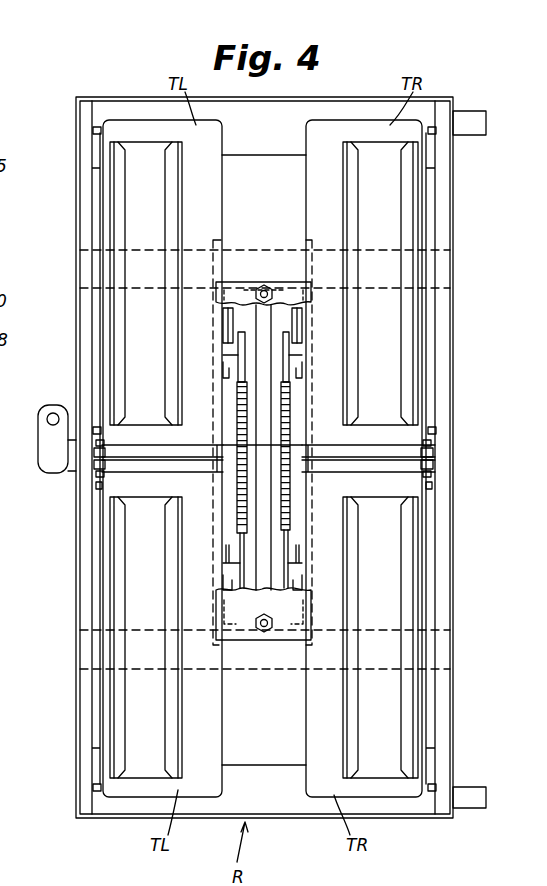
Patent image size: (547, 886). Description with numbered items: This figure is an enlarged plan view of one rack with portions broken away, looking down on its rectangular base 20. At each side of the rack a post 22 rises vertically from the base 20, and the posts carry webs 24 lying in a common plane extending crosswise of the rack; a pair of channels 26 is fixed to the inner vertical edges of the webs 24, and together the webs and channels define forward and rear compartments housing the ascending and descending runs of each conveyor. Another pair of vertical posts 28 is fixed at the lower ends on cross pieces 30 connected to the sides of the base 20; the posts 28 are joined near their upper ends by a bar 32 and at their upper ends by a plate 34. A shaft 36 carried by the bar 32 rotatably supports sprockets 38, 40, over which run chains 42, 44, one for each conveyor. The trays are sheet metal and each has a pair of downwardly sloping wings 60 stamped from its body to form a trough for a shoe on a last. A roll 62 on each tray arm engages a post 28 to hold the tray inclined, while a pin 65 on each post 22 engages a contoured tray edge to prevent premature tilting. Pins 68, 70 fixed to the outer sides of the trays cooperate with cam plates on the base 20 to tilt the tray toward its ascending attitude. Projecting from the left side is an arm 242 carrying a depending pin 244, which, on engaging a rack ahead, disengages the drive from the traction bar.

The rectangular base 20 is at (283, 818).
The post 22 is at (96, 480).
The web 24 is at (150, 460).
The channel 26 is at (223, 545).
The vertical post 28 is at (248, 288).
The cross piece 30 is at (233, 252).
The bar 32 is at (265, 374).
The plate 34 is at (280, 300).
The shaft 36 is at (299, 445).
The sprocket 38 is at (240, 412).
The sprocket 40 is at (289, 412).
The chain 42 is at (240, 505).
The chain 44 is at (290, 500).
The downwardly sloping wing 60 is at (406, 198).
The roll 62 is at (226, 311).
The pin 65 is at (96, 458).
The pin 68 is at (99, 430).
The pin 70 is at (93, 131).
The arm 242 is at (46, 441).
The depending pin 244 is at (52, 418).